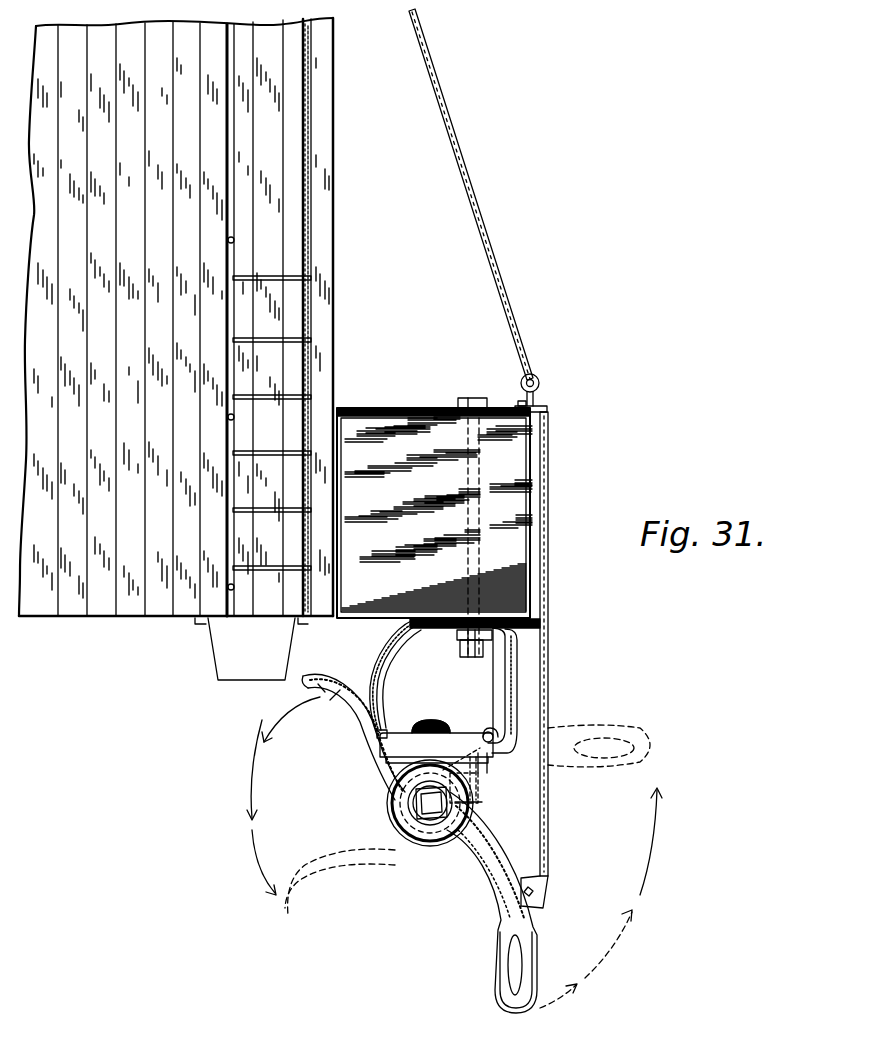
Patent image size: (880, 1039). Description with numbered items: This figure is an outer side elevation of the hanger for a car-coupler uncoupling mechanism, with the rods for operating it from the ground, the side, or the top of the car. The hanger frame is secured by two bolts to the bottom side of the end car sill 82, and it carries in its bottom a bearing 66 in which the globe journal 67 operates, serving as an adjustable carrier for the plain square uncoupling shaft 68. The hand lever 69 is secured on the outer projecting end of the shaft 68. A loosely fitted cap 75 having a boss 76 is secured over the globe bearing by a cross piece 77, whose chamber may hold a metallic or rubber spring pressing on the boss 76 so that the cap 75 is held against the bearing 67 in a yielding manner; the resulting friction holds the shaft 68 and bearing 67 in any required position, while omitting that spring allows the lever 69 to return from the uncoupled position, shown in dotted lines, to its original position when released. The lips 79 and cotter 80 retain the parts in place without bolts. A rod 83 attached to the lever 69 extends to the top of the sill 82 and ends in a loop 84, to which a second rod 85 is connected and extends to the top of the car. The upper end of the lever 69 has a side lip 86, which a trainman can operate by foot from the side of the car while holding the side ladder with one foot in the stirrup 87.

The bearing 66 is at (505, 672).
The globe journal 67 is at (412, 812).
The uncoupling shaft 68 is at (410, 817).
The hand lever 69 is at (497, 962).
The cap 75 is at (480, 784).
The boss 76 is at (442, 757).
The cross piece 77 is at (422, 745).
The lips 79 is at (490, 742).
The cotter 80 is at (384, 735).
The end car sill 82 is at (383, 603).
The rod 83 is at (546, 672).
The loop 84 is at (534, 381).
The second rod 85 is at (469, 196).
The side lip 86 is at (330, 684).
The stirrup 87 is at (213, 640).